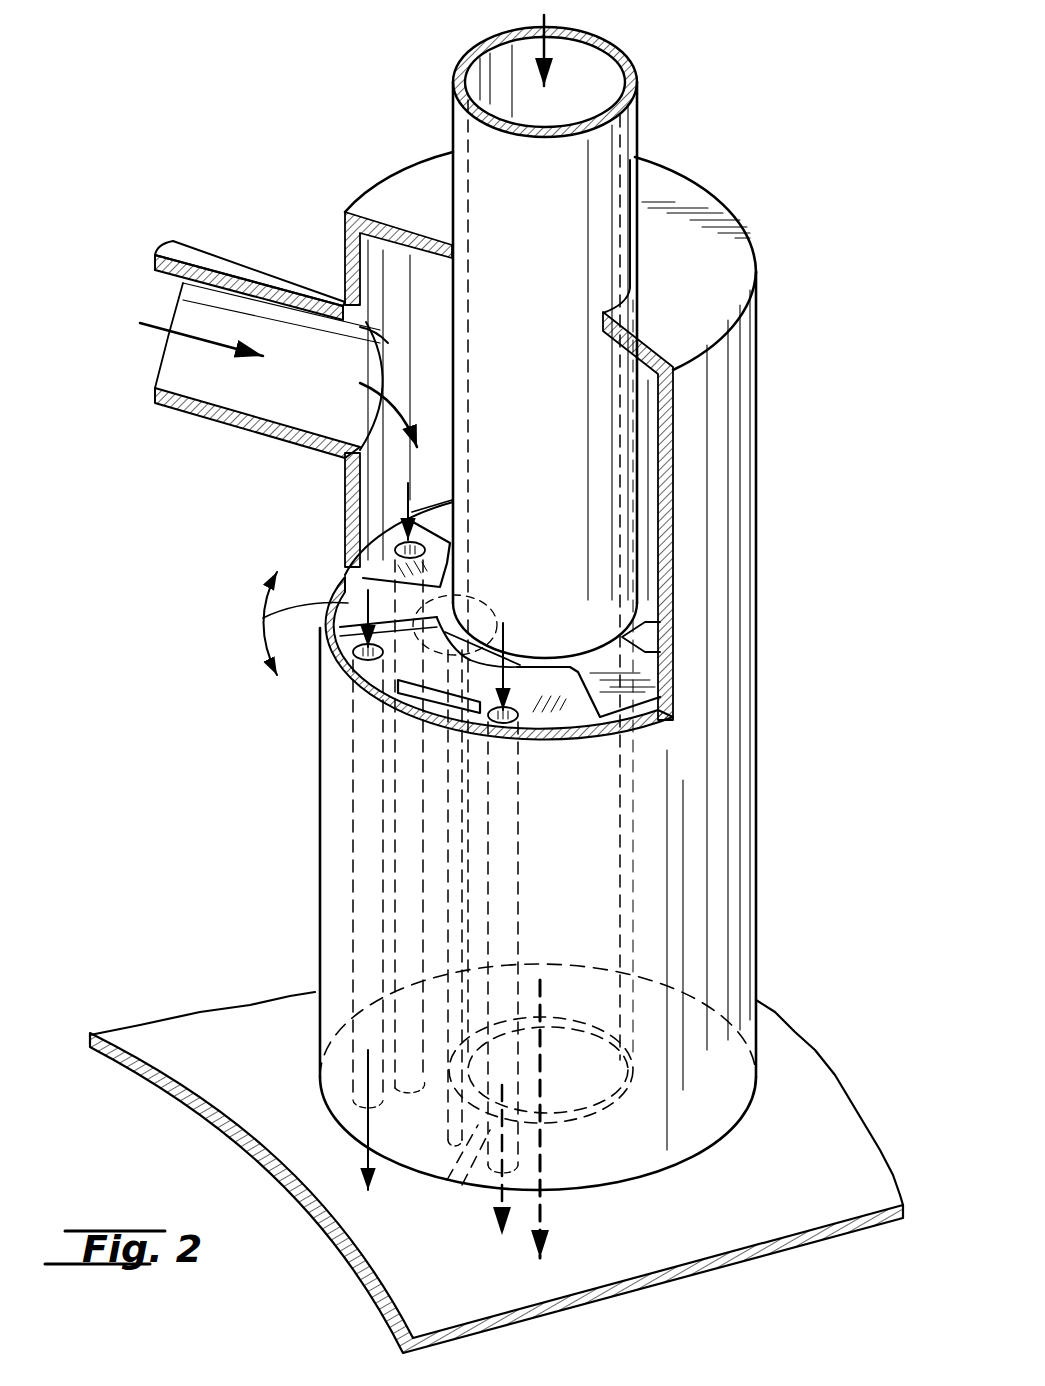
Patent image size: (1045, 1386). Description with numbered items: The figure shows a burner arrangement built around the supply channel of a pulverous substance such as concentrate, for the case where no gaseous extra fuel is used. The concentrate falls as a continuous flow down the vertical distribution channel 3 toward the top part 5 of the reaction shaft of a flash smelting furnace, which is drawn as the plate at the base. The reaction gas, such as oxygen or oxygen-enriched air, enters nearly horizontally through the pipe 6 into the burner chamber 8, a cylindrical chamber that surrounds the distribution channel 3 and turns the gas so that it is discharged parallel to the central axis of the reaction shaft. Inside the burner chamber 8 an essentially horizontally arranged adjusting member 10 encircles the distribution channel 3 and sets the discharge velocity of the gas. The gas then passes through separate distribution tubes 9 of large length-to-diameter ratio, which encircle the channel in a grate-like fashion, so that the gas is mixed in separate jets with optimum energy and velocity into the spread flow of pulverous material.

The distribution channel 3 is at (602, 72).
The top part of the reaction shaft 5 is at (160, 1040).
The pipe 6 is at (220, 262).
The burner chamber 8 is at (312, 784).
The distribution tubes 9 is at (355, 660).
The adjusting member 10 is at (352, 590).